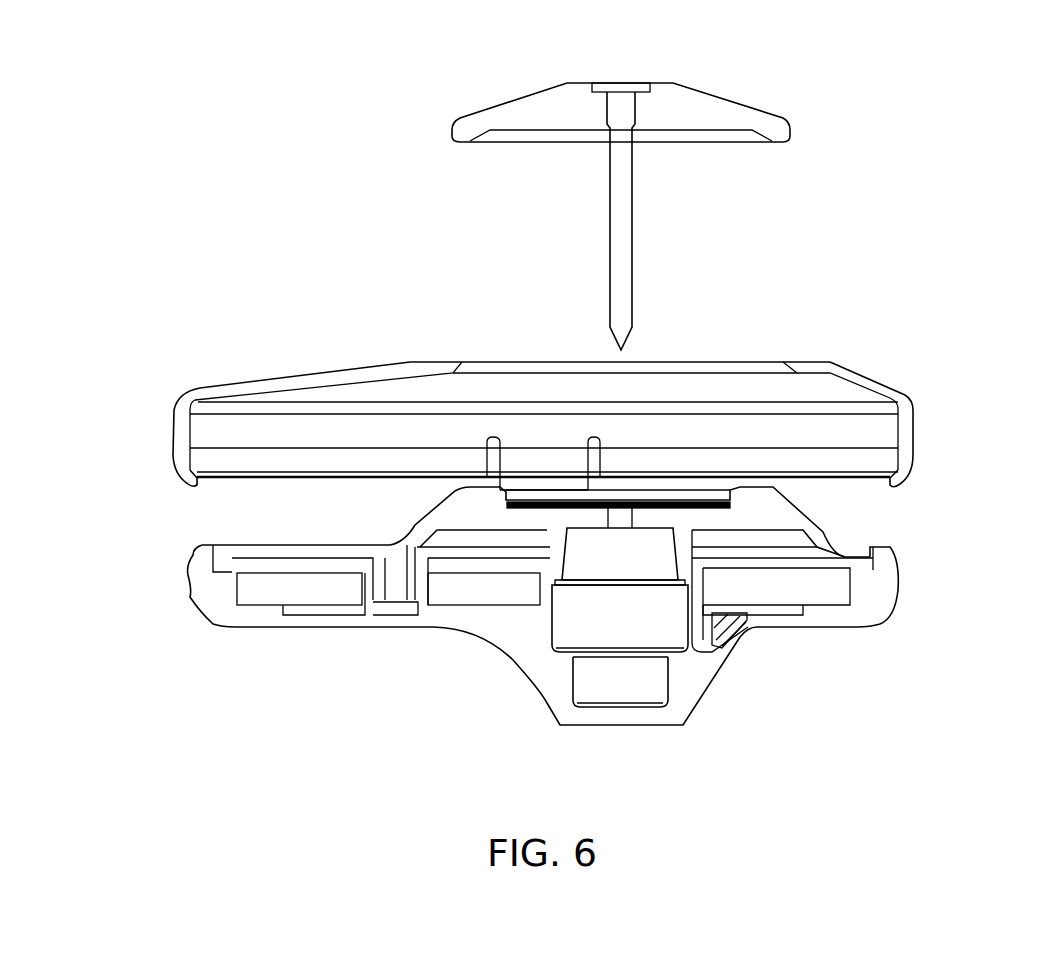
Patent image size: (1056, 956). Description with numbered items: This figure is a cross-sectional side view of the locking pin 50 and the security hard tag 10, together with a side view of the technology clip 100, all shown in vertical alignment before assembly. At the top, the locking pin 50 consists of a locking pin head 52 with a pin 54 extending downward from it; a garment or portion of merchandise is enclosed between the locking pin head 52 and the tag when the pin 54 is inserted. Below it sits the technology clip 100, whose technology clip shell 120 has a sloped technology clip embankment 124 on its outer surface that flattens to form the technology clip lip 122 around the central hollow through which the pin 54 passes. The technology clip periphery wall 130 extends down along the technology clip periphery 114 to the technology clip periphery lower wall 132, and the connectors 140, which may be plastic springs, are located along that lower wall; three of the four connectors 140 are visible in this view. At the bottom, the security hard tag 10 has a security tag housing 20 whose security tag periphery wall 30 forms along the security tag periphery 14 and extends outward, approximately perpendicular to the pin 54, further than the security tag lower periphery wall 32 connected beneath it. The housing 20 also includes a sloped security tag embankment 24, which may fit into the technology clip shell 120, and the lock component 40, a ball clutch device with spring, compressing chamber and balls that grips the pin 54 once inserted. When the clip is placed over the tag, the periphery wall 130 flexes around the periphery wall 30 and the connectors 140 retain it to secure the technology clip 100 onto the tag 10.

The security hard tag 10 is at (408, 650).
The security tag periphery 14 is at (895, 562).
The security tag housing 20 is at (683, 698).
The security tag embankment 24 is at (810, 528).
The security tag periphery wall 30 is at (197, 553).
The security tag lower periphery wall 32 is at (213, 623).
The lock component 40 is at (615, 625).
The locking pin 50 is at (735, 78).
The locking pin head 52 is at (515, 112).
The pin 54 is at (615, 225).
The technology clip 100 is at (243, 312).
The technology clip periphery 114 is at (913, 418).
The technology clip shell 120 is at (282, 407).
The technology clip lip 122 is at (505, 358).
The technology clip embankment 124 is at (847, 370).
The technology clip periphery wall 130 is at (173, 432).
The technology clip periphery lower wall 132 is at (807, 462).
The connectors 140 is at (540, 470).